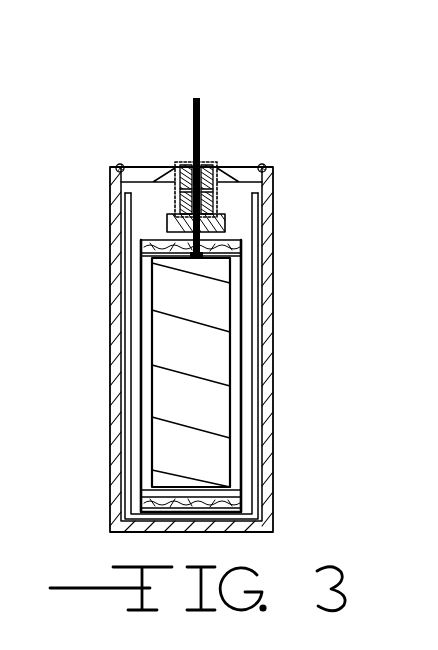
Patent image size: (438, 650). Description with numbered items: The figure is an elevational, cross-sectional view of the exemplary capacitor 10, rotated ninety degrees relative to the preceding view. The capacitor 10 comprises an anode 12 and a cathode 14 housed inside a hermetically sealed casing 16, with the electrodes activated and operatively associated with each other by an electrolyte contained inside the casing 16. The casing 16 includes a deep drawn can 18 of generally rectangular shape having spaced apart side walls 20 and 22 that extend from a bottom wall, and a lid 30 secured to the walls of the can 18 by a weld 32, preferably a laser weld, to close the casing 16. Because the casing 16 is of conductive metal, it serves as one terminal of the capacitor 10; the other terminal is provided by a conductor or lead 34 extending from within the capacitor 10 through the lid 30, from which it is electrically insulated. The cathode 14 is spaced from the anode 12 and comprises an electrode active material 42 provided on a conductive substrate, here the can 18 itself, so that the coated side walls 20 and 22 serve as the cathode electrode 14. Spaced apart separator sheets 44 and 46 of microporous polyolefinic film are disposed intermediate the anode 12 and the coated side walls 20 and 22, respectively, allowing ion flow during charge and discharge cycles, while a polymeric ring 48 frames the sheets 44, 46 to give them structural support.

The capacitor 10 is at (228, 283).
The anode 12 is at (243, 339).
The cathode 14 is at (146, 198).
The hermetically sealed casing 16 is at (295, 198).
The deep drawn can 18 is at (280, 260).
The side wall 20 is at (274, 381).
The side wall 22 is at (110, 390).
The lid 30 is at (160, 163).
The weld 32 is at (262, 163).
The lead 34 is at (200, 105).
The electrode active material 42 is at (272, 232).
The separator sheet 44 is at (247, 445).
The separator sheet 46 is at (137, 445).
The polymeric ring 48 is at (220, 509).